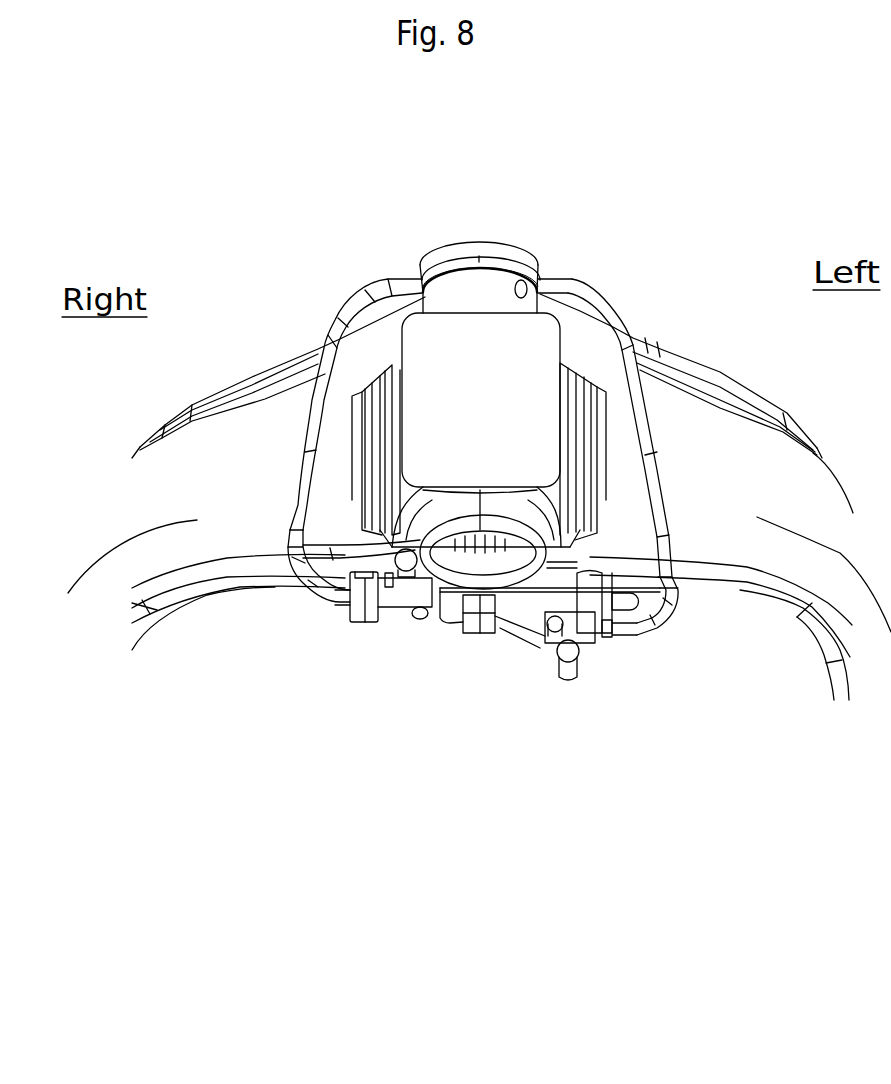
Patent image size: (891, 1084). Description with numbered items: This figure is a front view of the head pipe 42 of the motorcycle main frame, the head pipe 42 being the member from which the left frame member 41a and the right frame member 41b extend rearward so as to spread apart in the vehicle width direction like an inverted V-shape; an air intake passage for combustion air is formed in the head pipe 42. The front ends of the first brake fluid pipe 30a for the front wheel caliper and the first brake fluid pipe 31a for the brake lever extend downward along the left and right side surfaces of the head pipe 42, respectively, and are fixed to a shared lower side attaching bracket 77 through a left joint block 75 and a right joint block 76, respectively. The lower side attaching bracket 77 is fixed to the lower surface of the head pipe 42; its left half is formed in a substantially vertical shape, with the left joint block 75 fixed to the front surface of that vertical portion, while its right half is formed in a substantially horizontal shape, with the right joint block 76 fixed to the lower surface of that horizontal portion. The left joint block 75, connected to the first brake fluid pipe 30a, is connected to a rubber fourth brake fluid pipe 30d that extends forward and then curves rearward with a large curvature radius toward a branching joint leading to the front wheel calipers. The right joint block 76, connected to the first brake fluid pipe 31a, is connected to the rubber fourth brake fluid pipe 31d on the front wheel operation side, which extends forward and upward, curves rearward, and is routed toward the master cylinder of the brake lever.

The head pipe 42 is at (468, 293).
The first brake fluid pipe for the front wheel caliper 30a is at (637, 397).
The first brake fluid pipe for the brake lever 31a is at (318, 397).
The fourth brake fluid pipe on the front wheel operation side 31d is at (407, 590).
The fourth brake fluid pipe 30d is at (567, 673).
The left frame member 41a is at (717, 527).
The right frame member 41b is at (217, 533).
The left joint block 75 is at (583, 625).
The right joint block 76 is at (410, 610).
The lower side attaching bracket 77 is at (512, 633).